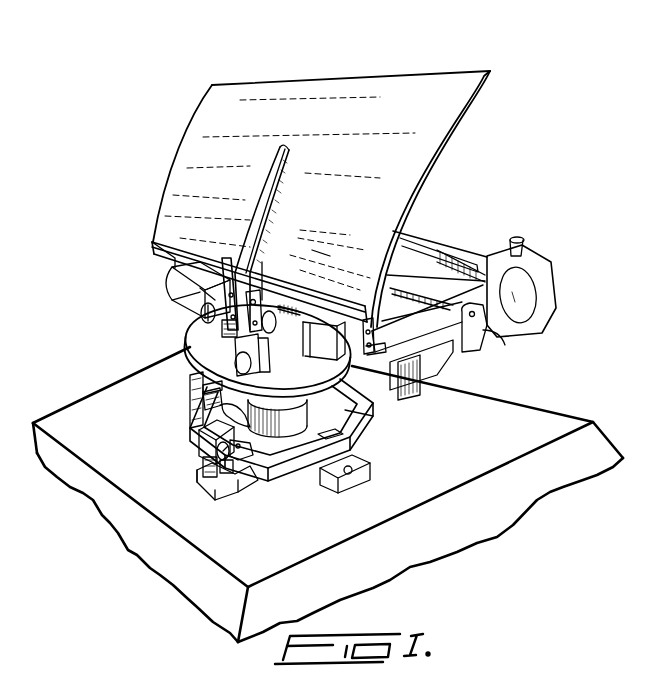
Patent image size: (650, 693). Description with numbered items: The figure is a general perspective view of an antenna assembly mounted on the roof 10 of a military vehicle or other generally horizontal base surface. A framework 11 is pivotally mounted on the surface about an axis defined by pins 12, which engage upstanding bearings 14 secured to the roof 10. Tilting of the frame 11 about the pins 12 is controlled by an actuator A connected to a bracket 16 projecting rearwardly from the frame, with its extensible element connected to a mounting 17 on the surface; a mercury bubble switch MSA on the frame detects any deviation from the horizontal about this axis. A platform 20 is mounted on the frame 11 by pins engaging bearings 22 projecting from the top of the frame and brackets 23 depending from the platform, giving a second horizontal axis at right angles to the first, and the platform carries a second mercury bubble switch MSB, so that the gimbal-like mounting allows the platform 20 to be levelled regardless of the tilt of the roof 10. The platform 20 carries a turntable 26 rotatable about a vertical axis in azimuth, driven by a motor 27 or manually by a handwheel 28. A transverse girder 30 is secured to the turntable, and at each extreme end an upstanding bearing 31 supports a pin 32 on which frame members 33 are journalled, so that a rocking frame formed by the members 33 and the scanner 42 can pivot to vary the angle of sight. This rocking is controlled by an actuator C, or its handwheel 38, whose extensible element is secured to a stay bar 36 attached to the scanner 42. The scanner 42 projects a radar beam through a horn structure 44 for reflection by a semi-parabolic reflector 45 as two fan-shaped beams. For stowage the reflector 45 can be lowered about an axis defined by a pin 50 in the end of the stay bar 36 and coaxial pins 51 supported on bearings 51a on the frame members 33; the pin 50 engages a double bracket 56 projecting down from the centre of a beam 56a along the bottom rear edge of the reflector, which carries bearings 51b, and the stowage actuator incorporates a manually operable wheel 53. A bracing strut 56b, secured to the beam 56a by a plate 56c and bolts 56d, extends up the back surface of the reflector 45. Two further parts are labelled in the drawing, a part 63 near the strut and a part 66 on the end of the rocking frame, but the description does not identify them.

The roof 10 is at (553, 412).
The framework 11 is at (377, 418).
The pins 12 is at (349, 480).
The upstanding bearings 14 is at (355, 470).
The bracket 16 is at (240, 458).
The mounting 17 is at (233, 493).
The platform 20 is at (195, 373).
The bearings 22 is at (220, 418).
The brackets 23 is at (300, 426).
The turntable 26 is at (200, 322).
The motor 27 is at (262, 350).
The handwheel 28 is at (190, 357).
The transverse girder 30 is at (447, 375).
The upstanding bearing 31 is at (480, 337).
The pin 32 is at (480, 317).
The frame members 33 is at (490, 298).
The stay bar 36 is at (292, 306).
The handwheel 38 is at (200, 305).
The scanner 42 is at (480, 250).
The horn structure 44 is at (417, 250).
The semi-parabolic reflector 45 is at (396, 80).
The pin 50 is at (253, 302).
The pins 51 is at (457, 378).
The bearings 51a is at (366, 342).
The bearings 51b is at (405, 323).
The manually operable wheel 53 is at (258, 342).
The double bracket 56 is at (197, 333).
The beam 56a is at (180, 257).
The bracing strut 56b is at (272, 172).
The plate 56c is at (266, 250).
The bolts 56d is at (325, 250).
The post 63 is at (226, 258).
The pin 66 is at (520, 238).
The actuator A is at (205, 441).
The actuator C is at (200, 297).
The mercury bubble switch MSA is at (350, 436).
The mercury bubble switch MSB is at (210, 387).